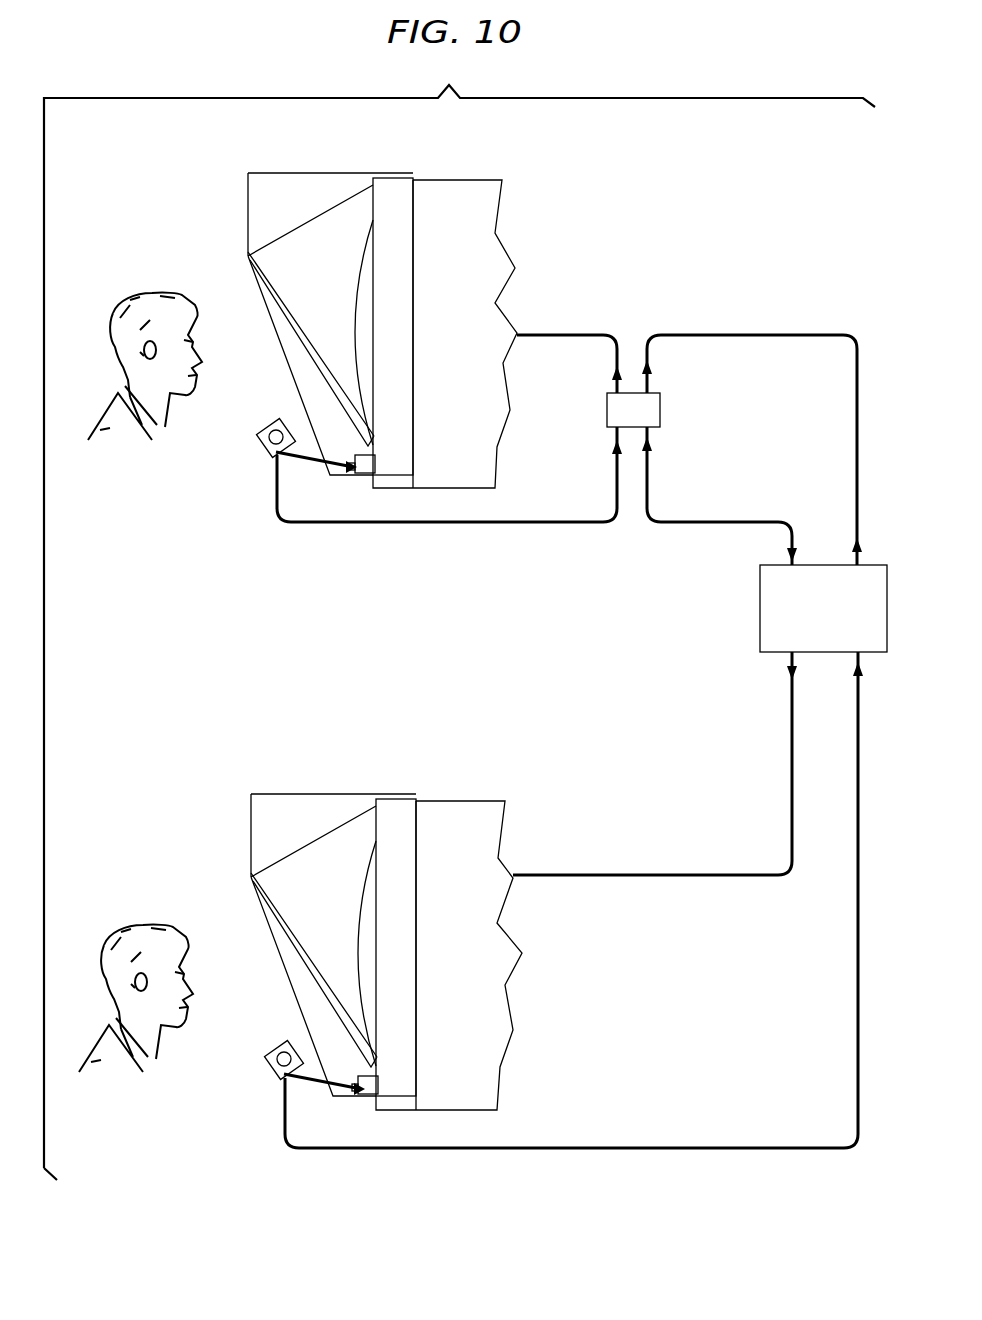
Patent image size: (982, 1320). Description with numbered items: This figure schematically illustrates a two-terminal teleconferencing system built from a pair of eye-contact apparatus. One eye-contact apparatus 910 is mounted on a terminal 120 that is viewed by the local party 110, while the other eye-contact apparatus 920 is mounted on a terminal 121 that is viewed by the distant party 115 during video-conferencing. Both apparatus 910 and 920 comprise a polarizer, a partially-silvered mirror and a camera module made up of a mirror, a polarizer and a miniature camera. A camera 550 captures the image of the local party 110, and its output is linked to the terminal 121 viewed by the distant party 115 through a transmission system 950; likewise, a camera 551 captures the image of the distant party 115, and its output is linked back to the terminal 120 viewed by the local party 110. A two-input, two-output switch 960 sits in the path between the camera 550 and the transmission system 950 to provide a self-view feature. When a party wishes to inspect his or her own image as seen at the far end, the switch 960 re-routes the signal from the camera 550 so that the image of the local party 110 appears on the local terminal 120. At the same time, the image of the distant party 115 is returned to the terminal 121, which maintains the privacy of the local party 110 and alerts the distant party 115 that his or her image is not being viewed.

The local party 110 is at (137, 290).
The distant party 115 is at (127, 920).
The terminal 120 is at (463, 180).
The terminal 121 is at (468, 801).
The camera 550 is at (262, 435).
The camera 551 is at (268, 1058).
The eye-contact apparatus 910 is at (322, 173).
The eye-contact apparatus 920 is at (325, 794).
The transmission system 950 is at (823, 608).
The two-input, two-output switch 960 is at (633, 410).